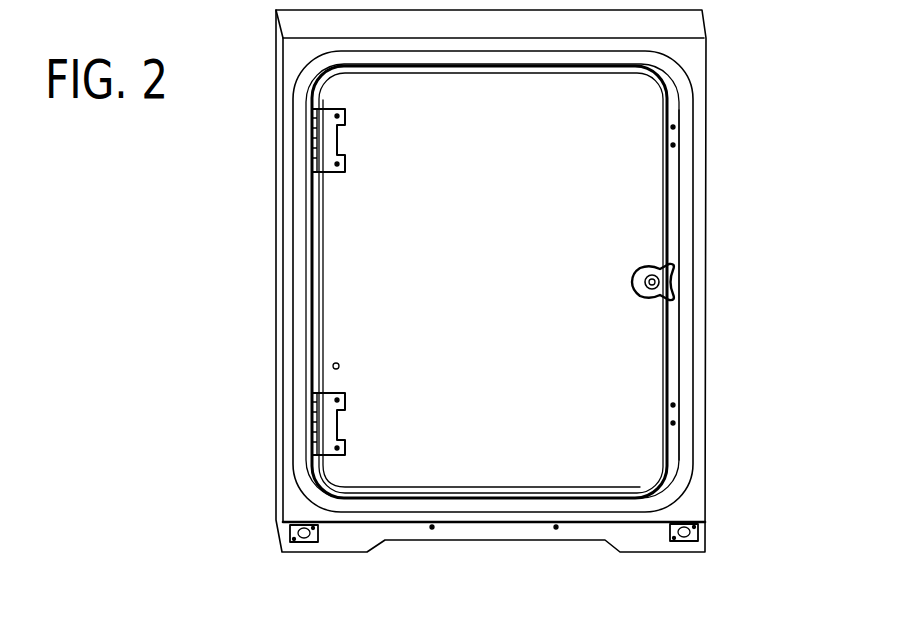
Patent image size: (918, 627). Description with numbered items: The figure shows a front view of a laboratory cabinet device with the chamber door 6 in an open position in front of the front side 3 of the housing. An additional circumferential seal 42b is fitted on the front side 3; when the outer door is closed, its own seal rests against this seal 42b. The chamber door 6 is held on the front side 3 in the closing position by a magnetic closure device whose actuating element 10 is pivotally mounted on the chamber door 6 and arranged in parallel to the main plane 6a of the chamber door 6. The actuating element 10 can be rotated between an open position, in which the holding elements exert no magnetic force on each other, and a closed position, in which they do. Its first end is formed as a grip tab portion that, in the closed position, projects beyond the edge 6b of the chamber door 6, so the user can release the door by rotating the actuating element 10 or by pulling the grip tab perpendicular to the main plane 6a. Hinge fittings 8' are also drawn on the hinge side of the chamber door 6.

The front side 3 is at (694, 61).
The chamber door 6 is at (317, 244).
The main plane 6a is at (387, 306).
The edge 6b is at (670, 372).
The additional circumferential seal 42b is at (683, 144).
The hinge 8' is at (283, 282).
The actuating element 10 is at (673, 283).